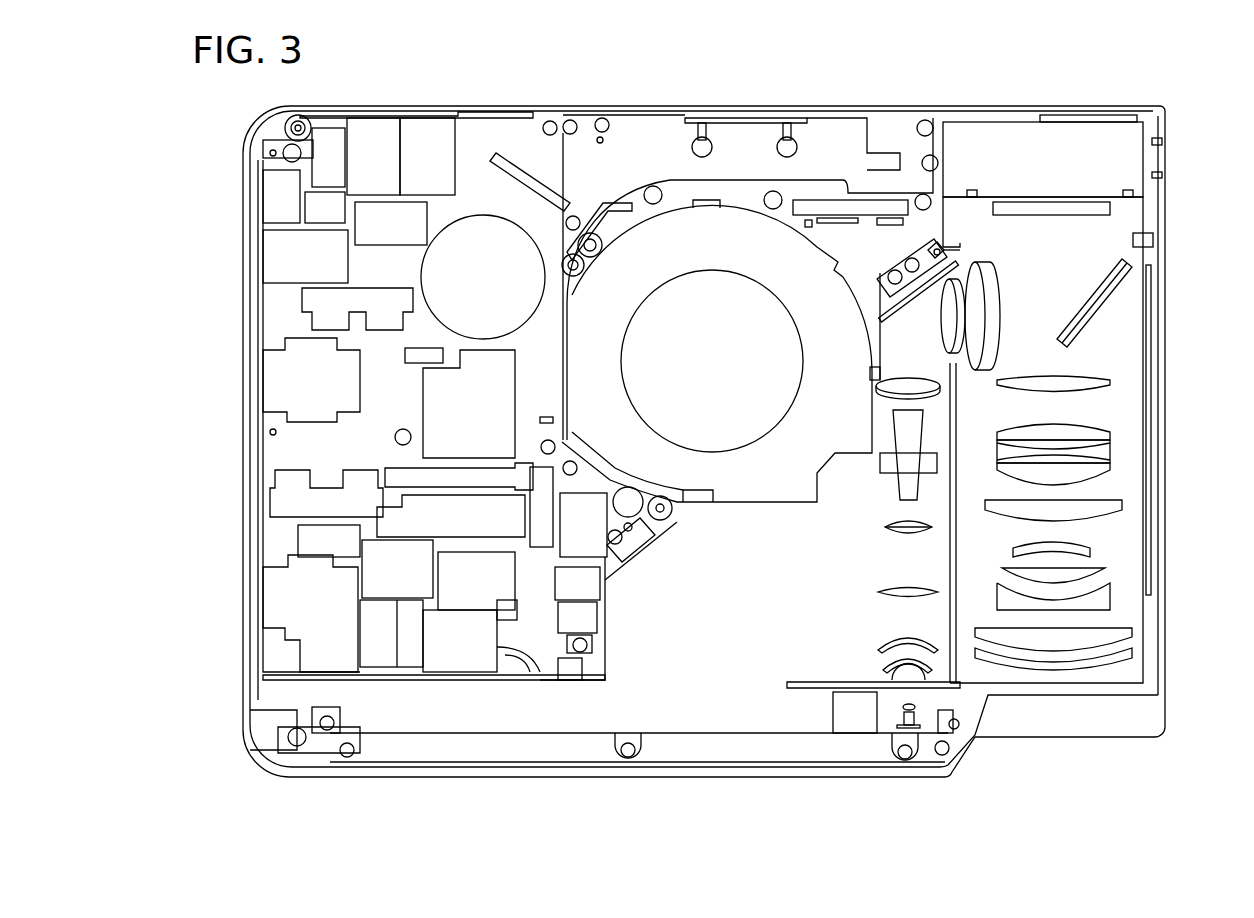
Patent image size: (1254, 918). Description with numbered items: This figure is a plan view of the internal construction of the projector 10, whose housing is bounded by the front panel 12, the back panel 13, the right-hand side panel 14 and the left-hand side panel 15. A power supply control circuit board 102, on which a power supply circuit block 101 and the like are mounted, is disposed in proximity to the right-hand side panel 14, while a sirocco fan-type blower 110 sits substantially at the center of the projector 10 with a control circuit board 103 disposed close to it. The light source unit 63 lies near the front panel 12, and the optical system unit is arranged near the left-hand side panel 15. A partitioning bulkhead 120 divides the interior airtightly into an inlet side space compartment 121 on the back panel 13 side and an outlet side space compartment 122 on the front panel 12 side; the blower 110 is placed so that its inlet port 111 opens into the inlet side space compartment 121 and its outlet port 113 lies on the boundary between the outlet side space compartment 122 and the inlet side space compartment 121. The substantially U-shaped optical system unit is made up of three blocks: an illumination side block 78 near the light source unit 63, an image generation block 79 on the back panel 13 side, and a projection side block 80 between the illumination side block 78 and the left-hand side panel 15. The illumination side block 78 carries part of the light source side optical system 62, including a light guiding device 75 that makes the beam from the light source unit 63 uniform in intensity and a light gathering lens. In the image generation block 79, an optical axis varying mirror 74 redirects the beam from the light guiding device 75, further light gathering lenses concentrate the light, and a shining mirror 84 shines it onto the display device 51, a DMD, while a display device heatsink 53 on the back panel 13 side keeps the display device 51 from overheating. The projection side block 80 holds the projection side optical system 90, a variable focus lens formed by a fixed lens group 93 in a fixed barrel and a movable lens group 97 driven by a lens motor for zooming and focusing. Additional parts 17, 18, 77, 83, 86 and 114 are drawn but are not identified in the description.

The projector 10 is at (1172, 112).
The front panel 12 is at (460, 772).
The back panel 13 is at (480, 106).
The right-hand side panel 14 is at (243, 488).
The left-hand side panel 15 is at (1165, 250).
The bottom wall 17 is at (495, 772).
The corner portion 18 is at (243, 217).
The display device 51 is at (1070, 207).
The display device heatsink 53 is at (977, 152).
The light source side optical system 62 is at (900, 368).
The light source unit 63 is at (817, 620).
The optical axis varying mirror 74 is at (923, 332).
The light guiding device 75 is at (908, 425).
The lens barrel 77 is at (1118, 343).
The illumination side block 78 is at (912, 285).
The image generation block 79 is at (958, 225).
The projection side block 80 is at (1117, 577).
The lens 83 is at (990, 307).
The shining mirror 84 is at (1103, 302).
The guide plate 86 is at (1153, 378).
The projection side optical system 90 is at (1103, 523).
The fixed lens group 93 is at (1120, 643).
The movable lens group 97 is at (1093, 452).
The power supply circuit block 101 is at (290, 262).
The power supply control circuit board 102 is at (280, 540).
The control circuit board 103 is at (588, 157).
The sirocco fan-type blower 110 is at (677, 242).
The inlet port 111 is at (732, 303).
The outlet port 113 is at (718, 505).
The bottom frame 114 is at (418, 745).
The partitioning bulkhead 120 is at (312, 682).
The inlet side space compartment 121 is at (648, 155).
The outlet side space compartment 122 is at (395, 705).